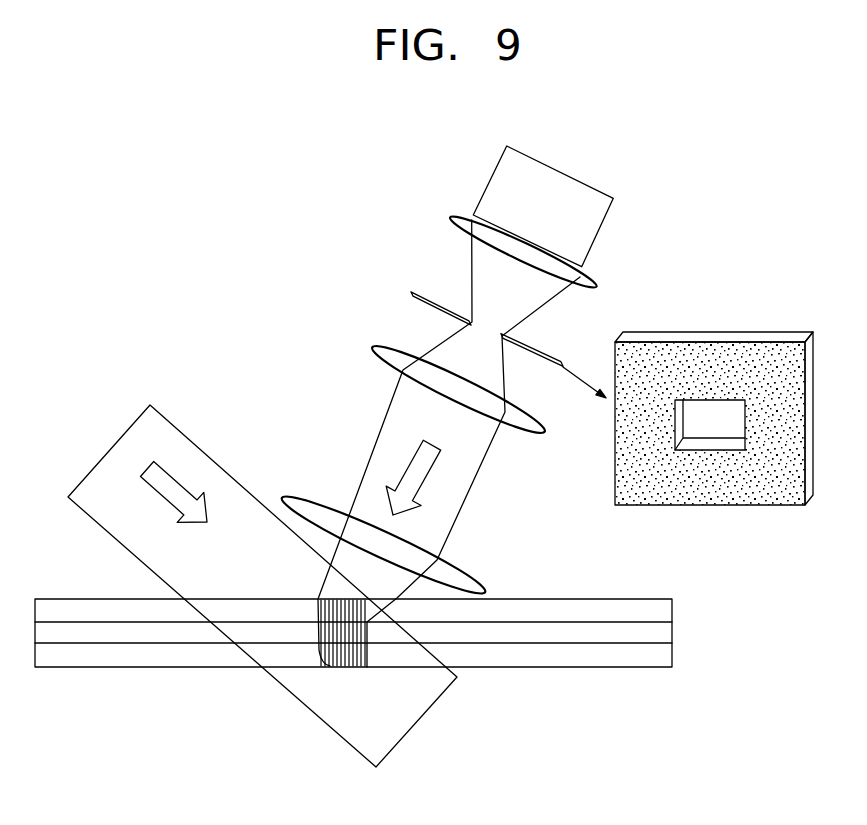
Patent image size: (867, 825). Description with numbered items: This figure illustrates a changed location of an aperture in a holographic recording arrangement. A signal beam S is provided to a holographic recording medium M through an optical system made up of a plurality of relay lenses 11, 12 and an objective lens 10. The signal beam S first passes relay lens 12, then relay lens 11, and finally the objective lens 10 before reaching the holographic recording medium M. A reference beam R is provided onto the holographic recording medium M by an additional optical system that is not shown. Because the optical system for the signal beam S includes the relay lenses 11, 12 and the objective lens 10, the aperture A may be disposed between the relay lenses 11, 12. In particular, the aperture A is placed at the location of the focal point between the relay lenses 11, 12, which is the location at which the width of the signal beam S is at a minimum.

The objective lens 10 is at (284, 497).
The relay lens 11 is at (370, 348).
The relay lens 12 is at (450, 217).
The signal beam S is at (583, 190).
The aperture A is at (768, 352).
The reference beam R is at (113, 445).
The holographic recording medium M is at (672, 633).